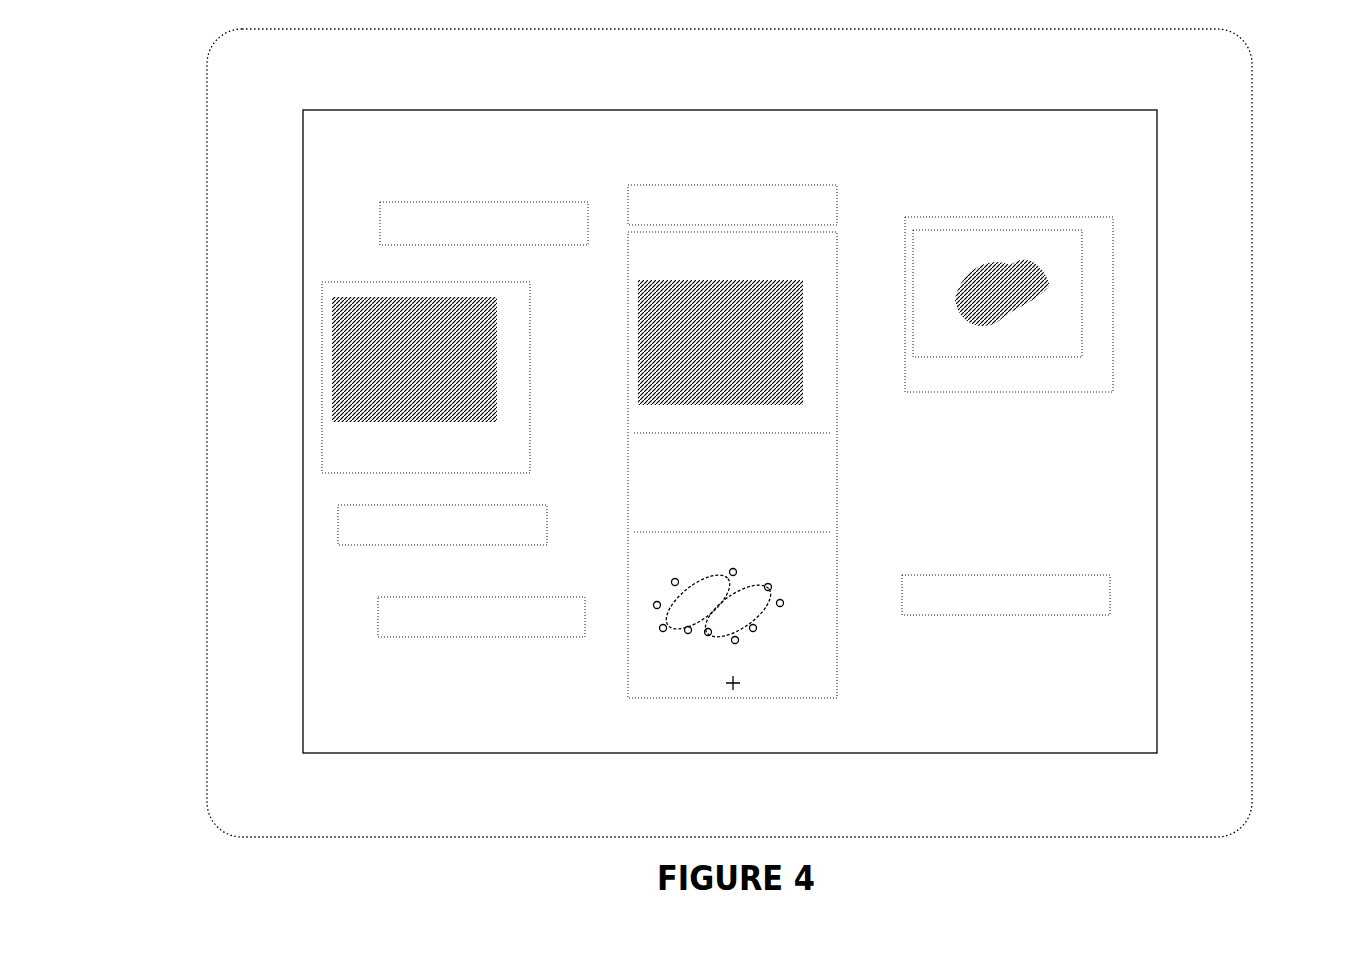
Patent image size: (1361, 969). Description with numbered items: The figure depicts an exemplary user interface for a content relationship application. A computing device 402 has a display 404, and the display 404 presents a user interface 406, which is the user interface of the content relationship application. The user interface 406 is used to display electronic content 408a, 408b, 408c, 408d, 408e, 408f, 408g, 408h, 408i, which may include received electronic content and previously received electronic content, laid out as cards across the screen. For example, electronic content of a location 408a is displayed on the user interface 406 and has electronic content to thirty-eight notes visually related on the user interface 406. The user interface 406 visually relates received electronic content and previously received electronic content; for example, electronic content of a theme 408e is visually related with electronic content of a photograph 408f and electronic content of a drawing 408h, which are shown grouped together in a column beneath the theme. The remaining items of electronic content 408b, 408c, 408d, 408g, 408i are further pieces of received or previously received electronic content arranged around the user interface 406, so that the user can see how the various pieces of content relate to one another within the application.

The computing device 402 is at (297, 70).
The display 404 is at (366, 134).
The user interface 406 is at (330, 196).
The electronic content of a location 408a is at (380, 218).
The electronic content 408b is at (343, 385).
The electronic content 408c is at (347, 505).
The electronic content 408d is at (380, 597).
The electronic content of a theme 408e is at (813, 183).
The electronic content of a photograph 408f is at (820, 248).
The electronic content 408g is at (1093, 295).
The electronic content of a drawing 408h is at (820, 570).
The electronic content 408i is at (1063, 578).